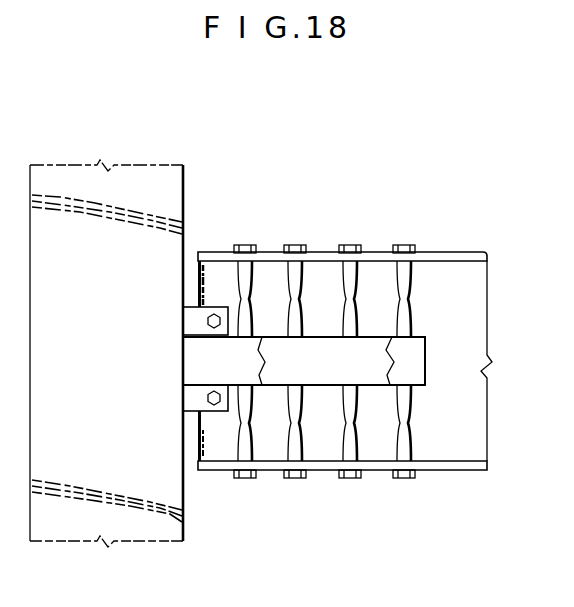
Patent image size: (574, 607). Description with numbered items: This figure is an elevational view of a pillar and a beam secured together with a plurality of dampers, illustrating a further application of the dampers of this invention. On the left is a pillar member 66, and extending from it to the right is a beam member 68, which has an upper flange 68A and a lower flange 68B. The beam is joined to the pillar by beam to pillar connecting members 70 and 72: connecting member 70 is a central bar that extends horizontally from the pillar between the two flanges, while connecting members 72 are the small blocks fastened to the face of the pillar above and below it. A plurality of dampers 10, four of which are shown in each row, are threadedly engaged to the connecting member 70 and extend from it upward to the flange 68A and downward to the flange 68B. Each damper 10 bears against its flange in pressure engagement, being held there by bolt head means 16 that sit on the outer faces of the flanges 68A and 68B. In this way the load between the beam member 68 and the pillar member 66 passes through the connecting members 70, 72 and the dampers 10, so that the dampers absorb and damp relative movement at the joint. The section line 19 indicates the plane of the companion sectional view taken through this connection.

The pillar member 66 is at (135, 182).
The beam to pillar connecting member 72 is at (193, 320).
The bolt head means 16 is at (300, 245).
The section line 19- 19 is at (462, 212).
The flange 68A is at (472, 253).
The damper 10 is at (415, 282).
The beam to pillar connecting member 70 is at (425, 352).
The flange 68B is at (380, 466).
The beam member 68 is at (456, 473).